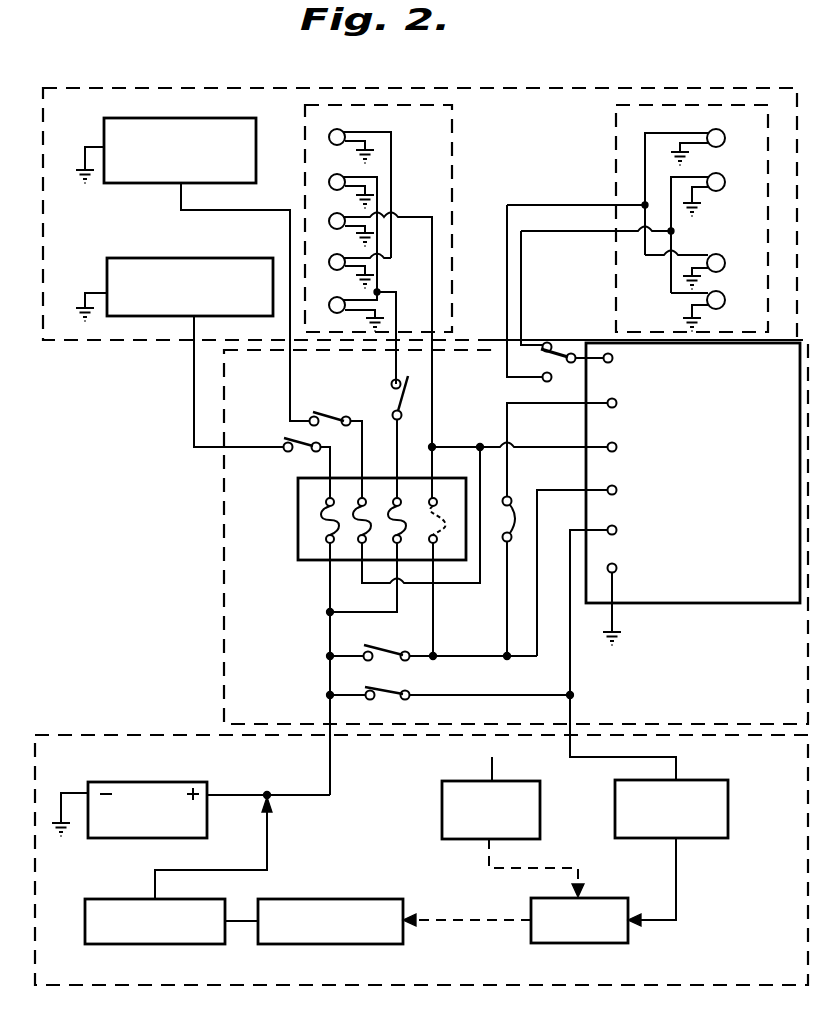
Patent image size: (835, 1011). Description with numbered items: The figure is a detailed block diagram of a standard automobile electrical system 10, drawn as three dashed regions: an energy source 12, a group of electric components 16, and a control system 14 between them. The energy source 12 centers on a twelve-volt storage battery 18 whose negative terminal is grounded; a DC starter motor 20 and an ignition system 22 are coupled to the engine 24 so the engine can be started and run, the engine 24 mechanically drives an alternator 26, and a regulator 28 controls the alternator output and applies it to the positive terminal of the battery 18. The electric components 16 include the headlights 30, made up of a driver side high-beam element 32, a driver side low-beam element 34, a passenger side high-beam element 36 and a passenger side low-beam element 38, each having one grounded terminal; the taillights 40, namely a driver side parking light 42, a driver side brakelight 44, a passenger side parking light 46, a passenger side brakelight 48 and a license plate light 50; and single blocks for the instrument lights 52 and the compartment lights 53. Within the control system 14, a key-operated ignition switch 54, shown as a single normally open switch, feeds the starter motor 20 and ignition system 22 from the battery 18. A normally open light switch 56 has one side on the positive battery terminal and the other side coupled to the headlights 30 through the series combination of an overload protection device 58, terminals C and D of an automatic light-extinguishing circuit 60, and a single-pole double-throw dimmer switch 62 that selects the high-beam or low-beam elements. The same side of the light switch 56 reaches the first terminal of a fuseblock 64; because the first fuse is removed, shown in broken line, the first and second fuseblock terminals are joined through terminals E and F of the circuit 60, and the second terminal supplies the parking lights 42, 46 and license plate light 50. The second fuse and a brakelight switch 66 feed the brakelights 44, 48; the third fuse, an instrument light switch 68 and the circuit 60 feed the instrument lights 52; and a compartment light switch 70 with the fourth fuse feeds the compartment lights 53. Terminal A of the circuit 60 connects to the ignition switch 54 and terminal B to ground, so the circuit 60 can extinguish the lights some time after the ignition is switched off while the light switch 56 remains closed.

The electrical system 10 is at (603, 63).
The energy source 12 is at (135, 735).
The control system 14 is at (224, 573).
The electric components 16 is at (208, 88).
The storage battery 18 is at (150, 782).
The starter motor 20 is at (541, 805).
The ignition system 22 is at (728, 805).
The engine 24 is at (608, 945).
The alternator 26 is at (318, 898).
The regulator 28 is at (92, 898).
The headlights 30 is at (616, 155).
The driver side high-beam element 32 is at (722, 131).
The driver side low-beam element 34 is at (722, 175).
The passenger side high-beam element 36 is at (720, 253).
The passenger side low-beam element 38 is at (722, 293).
The taillights 40 is at (452, 140).
The driver side parking light 42 is at (343, 128).
The driver side brakelight 44 is at (330, 176).
The passenger side parking light 46 is at (330, 256).
The passenger side brakelight 48 is at (330, 299).
The license plate light 50 is at (330, 215).
The instrument lights 52 is at (136, 185).
The compartment lights 53 is at (157, 258).
The ignition switch 54 is at (392, 703).
The light switch 56 is at (385, 661).
The overload protection device 58 is at (516, 493).
The automatic light-extinguishing circuit 60 is at (688, 605).
The dimmer switch 62 is at (565, 332).
The fuseblock 64 is at (302, 563).
The brakelight switch 66 is at (383, 396).
The instrument light switch 68 is at (330, 410).
The compartment light switch 70 is at (282, 438).